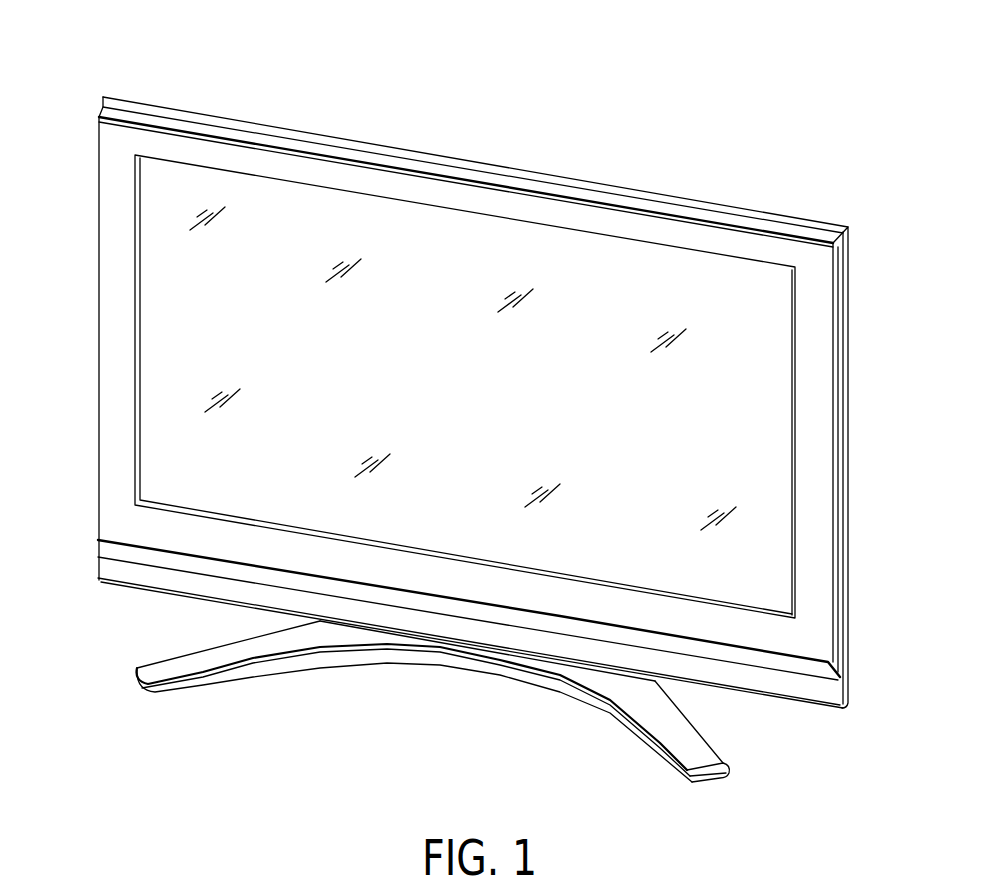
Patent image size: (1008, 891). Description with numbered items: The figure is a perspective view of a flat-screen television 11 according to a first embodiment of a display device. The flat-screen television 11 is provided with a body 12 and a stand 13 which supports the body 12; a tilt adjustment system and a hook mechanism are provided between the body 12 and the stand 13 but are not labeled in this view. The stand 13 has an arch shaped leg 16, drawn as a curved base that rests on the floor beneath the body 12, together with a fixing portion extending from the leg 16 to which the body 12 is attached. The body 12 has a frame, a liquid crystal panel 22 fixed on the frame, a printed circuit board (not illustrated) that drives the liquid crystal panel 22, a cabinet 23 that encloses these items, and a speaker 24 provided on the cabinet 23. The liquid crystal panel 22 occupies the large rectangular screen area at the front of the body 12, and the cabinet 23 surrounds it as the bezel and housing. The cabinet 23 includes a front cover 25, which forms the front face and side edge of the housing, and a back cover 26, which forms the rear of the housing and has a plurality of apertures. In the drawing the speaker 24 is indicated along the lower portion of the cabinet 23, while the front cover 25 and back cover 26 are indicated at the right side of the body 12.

The flat-screen television 11 is at (480, 398).
The body 12 is at (480, 387).
The stand 13 is at (487, 706).
The leg 16 is at (262, 655).
The liquid crystal panel 22 is at (645, 265).
The cabinet 23 is at (243, 121).
The speaker 24 is at (105, 550).
The front cover 25 is at (838, 308).
The back cover 26 is at (848, 255).